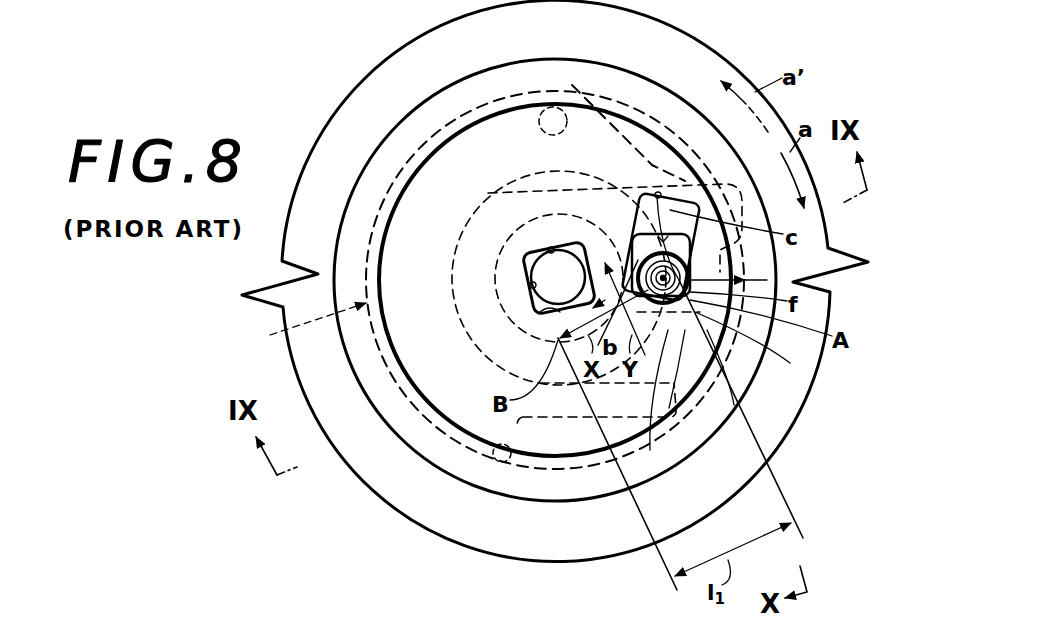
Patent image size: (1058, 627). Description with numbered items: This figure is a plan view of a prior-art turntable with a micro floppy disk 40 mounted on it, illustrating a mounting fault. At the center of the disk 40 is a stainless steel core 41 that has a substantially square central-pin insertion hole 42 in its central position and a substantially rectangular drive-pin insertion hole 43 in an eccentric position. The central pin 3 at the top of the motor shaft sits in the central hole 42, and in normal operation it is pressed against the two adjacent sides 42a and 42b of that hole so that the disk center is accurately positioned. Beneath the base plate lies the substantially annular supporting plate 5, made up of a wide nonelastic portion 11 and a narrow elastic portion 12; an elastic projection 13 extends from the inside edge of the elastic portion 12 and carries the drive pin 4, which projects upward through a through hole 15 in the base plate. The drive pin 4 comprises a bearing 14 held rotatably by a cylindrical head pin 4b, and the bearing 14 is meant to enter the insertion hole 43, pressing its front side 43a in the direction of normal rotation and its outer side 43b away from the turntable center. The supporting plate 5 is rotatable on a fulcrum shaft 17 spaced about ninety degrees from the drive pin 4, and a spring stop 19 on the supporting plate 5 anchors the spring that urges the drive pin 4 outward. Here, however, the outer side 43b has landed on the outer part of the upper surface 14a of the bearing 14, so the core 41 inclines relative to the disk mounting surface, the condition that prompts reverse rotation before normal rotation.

The central pin 3 is at (533, 268).
The drive pin 4 is at (638, 260).
The head pin 4b is at (734, 405).
The supporting plate 5 is at (309, 325).
The nonelastic portion 11 is at (350, 192).
The elastic portion 12 is at (780, 395).
The elastic projection 13 is at (669, 408).
The bearing 14 is at (677, 208).
The upper surface of the bearing 14a is at (650, 212).
The through hole 15 is at (660, 195).
The fulcrum shaft 17 is at (545, 107).
The spring stop 19 is at (503, 462).
The micro floppy disk 40 is at (388, 478).
The core 41 is at (380, 167).
The central-pin insertion hole 42 is at (537, 310).
The side of the central hole 42a is at (527, 283).
The side of the central hole 42b is at (547, 248).
The drive-pin insertion hole 43 is at (657, 195).
The front side of the insertion hole 43a is at (650, 450).
The outer side of the insertion hole 43b is at (790, 363).